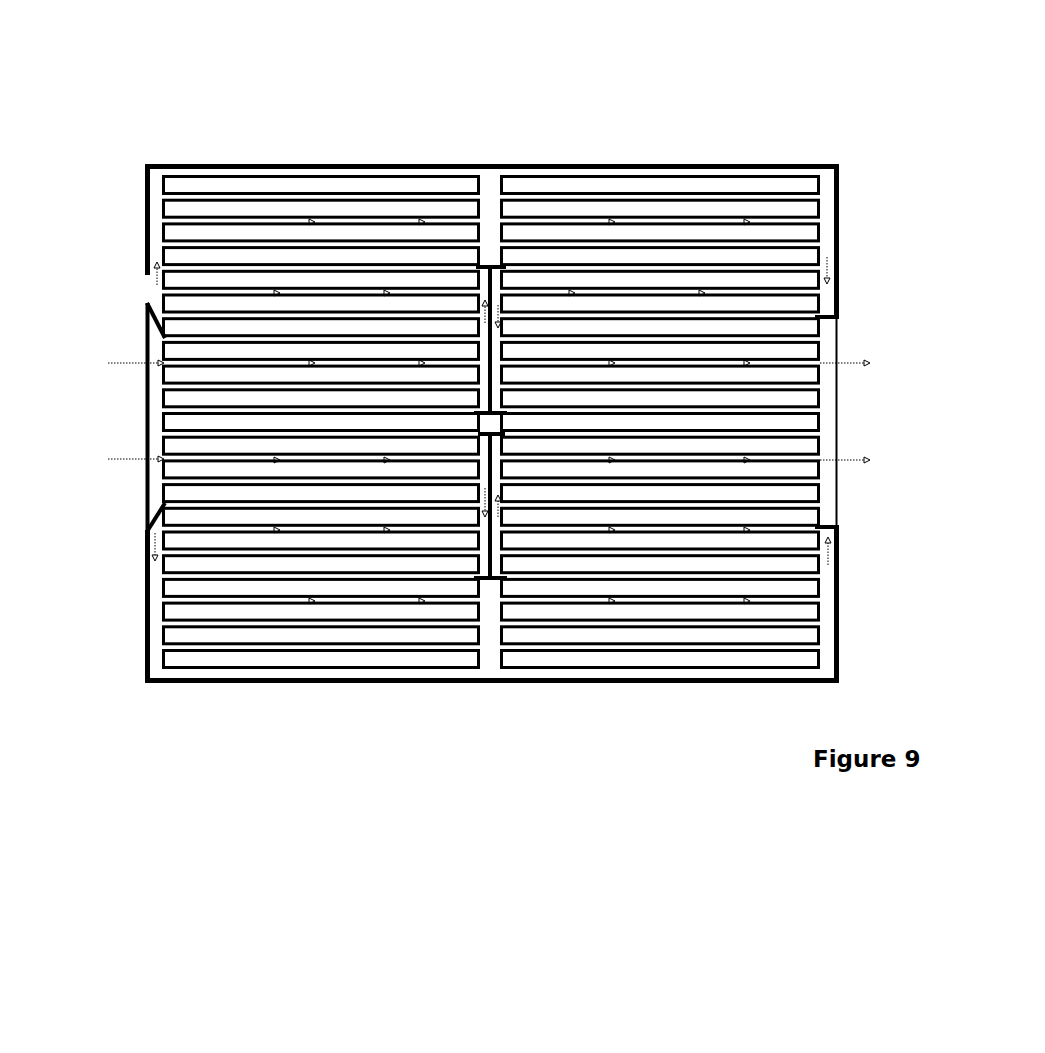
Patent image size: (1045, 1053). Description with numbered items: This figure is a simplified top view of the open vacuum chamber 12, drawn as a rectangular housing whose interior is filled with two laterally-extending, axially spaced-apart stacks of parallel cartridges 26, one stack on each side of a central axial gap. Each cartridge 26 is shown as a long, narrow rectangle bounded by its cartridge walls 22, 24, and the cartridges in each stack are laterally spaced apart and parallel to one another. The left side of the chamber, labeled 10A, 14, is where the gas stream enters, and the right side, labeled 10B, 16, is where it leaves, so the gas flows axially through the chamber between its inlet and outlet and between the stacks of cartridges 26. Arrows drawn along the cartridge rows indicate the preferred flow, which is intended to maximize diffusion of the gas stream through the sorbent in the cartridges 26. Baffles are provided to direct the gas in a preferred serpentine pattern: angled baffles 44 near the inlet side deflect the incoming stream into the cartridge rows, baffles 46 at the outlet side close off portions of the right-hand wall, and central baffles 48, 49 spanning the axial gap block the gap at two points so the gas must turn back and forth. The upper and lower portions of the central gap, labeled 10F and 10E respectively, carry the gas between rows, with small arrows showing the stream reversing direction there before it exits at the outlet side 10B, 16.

The housing 12 is at (598, 684).
The first side wall 10A is at (96, 423).
The first side wall 14 is at (145, 490).
The second side wall 10B is at (885, 423).
The second side wall 16 is at (838, 497).
The channel wall 22 is at (491, 425).
The channel wall 24 is at (712, 185).
The flow channel 26 is at (500, 193).
The inlet flap 44 is at (143, 323).
The outlet flap 46 is at (839, 318).
The central divider 48 is at (489, 264).
The central divider 49 is at (485, 580).
The central lower passage 10E is at (501, 660).
The central upper passage 10F is at (507, 172).